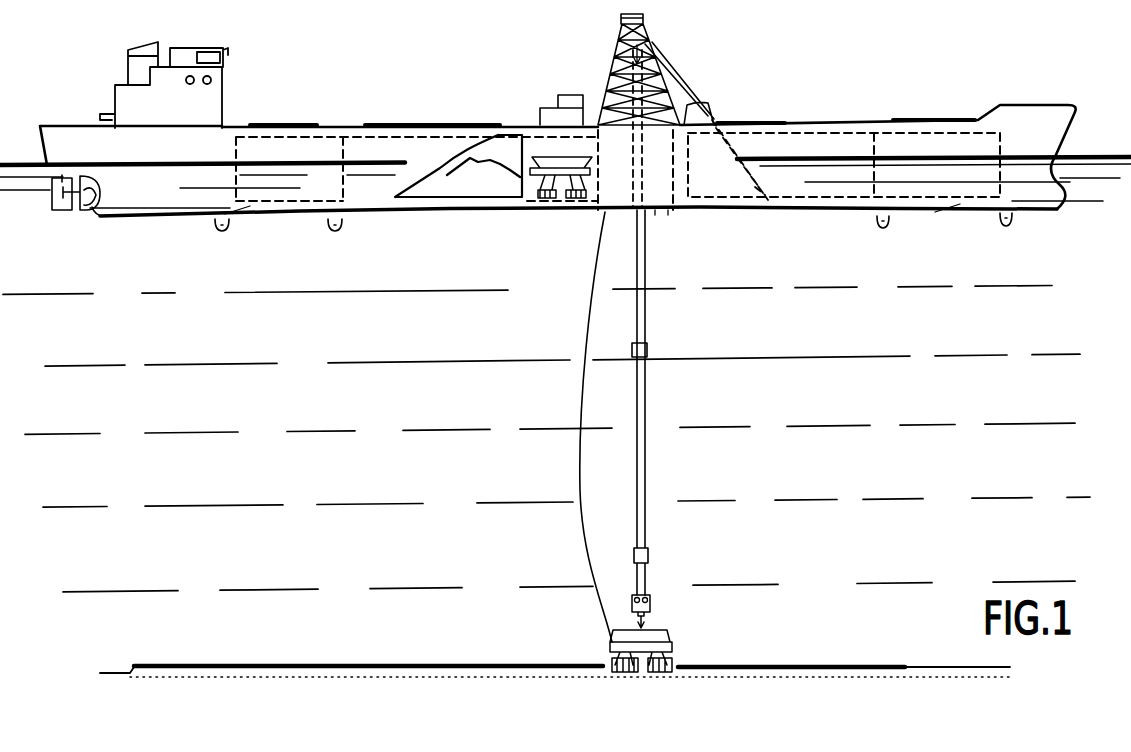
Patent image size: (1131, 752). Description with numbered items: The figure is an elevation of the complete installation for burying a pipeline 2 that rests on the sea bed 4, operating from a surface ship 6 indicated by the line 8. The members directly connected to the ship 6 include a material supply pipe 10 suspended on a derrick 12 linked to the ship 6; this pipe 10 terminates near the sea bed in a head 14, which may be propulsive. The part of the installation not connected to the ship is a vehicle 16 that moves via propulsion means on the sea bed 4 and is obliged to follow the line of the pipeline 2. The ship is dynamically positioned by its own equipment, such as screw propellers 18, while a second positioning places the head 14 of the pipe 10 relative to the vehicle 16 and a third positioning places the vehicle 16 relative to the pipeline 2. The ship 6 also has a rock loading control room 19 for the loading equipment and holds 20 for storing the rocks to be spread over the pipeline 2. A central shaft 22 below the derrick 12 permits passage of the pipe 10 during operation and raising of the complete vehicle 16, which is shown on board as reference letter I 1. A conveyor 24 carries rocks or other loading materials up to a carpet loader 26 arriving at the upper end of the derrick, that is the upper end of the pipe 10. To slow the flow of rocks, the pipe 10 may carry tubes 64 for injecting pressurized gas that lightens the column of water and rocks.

The vehicle raised on board 1 is at (562, 186).
The pipeline 2 is at (768, 664).
The sea bed 4 is at (922, 665).
The ship 6 is at (957, 87).
The surface ship line 8 is at (1084, 152).
The material supply pipe 10 is at (642, 415).
The derrick 12 is at (593, 55).
The head 14 is at (648, 598).
The vehicle 16 is at (684, 632).
The screw propellers 18 is at (880, 221).
The rock loading control room 19 is at (540, 108).
The holds 20 is at (372, 147).
The central shaft 22 is at (662, 213).
The conveyor 24 is at (248, 206).
The carpet loader 26 is at (673, 63).
The tubes 64 is at (648, 350).